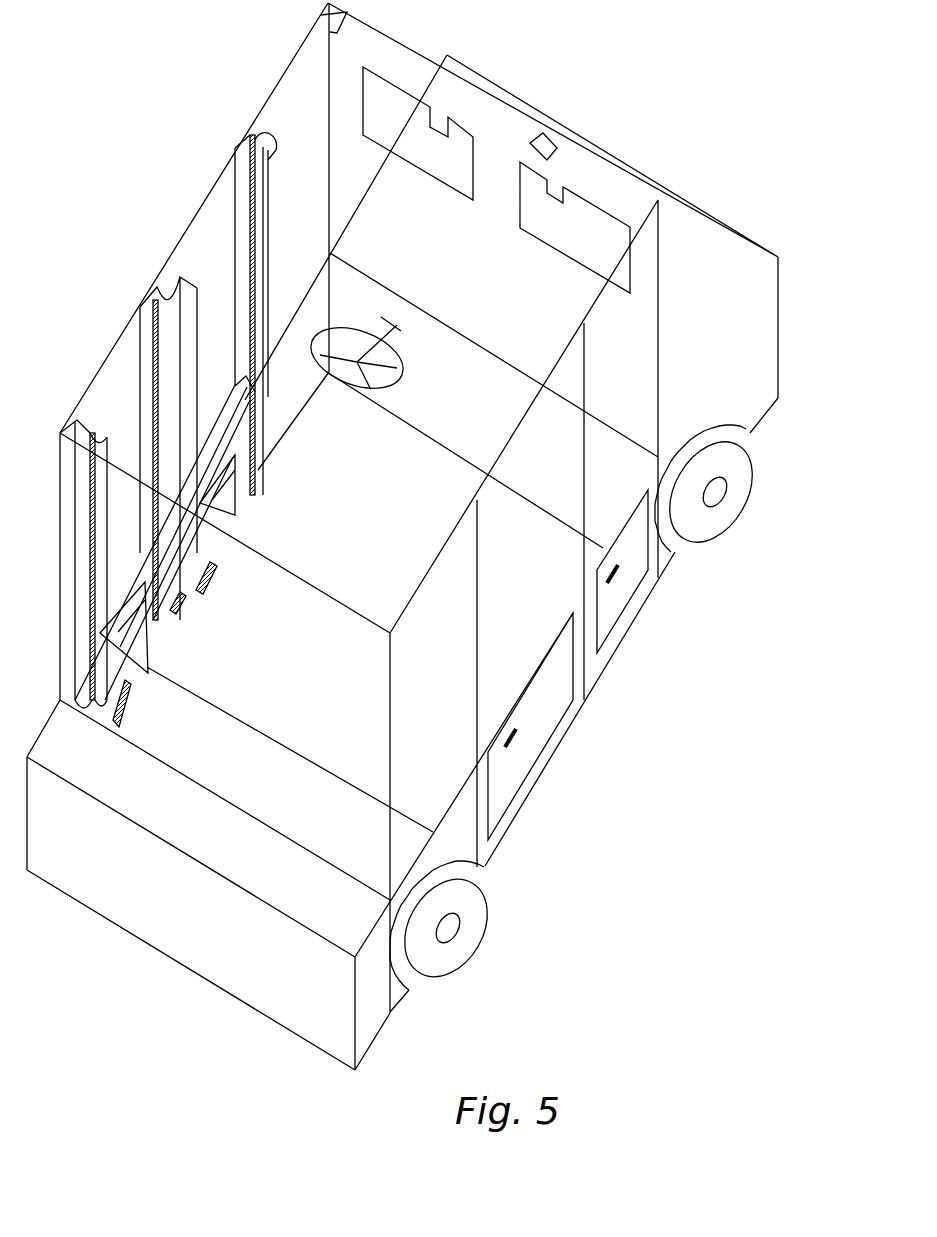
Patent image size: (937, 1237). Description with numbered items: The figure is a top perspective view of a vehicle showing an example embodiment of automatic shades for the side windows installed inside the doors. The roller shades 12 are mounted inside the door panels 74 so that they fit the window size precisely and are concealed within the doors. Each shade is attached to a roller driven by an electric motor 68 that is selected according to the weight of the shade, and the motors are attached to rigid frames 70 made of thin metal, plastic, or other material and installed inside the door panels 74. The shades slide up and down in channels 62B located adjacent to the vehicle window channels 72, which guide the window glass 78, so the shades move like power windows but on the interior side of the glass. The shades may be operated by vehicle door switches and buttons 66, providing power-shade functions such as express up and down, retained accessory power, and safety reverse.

The roller shades 12 is at (191, 430).
The channels 62B is at (262, 187).
The vehicle door switches and buttons 66 is at (182, 607).
The electric motors 68 is at (212, 580).
The rigid frames 70 is at (220, 517).
The vehicle window channels 72 is at (237, 235).
The door panels 74 is at (238, 477).
The window glass 78 is at (230, 193).